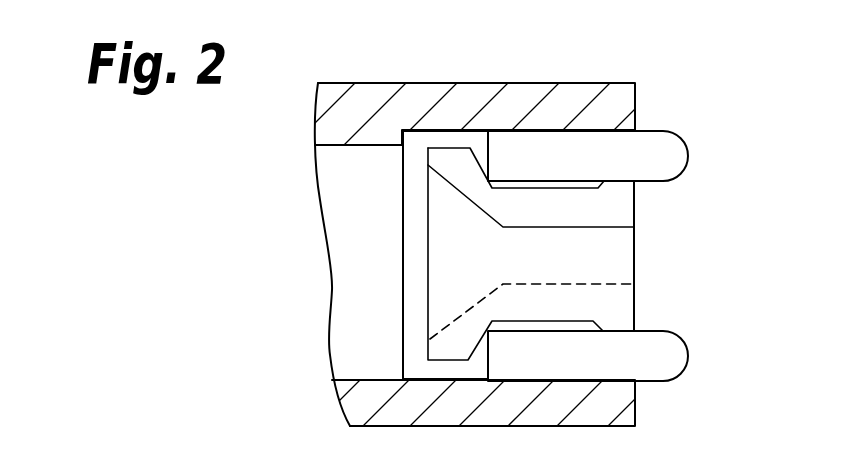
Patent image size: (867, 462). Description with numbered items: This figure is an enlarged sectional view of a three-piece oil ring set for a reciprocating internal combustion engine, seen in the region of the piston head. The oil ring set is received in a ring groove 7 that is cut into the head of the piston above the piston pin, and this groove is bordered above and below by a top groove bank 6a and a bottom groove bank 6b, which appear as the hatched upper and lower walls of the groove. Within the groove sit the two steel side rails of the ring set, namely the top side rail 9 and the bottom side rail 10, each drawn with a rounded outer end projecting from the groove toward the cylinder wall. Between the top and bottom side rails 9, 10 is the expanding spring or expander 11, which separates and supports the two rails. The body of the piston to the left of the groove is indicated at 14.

The top groove bank 6a is at (627, 95).
The bottom groove bank 6b is at (625, 398).
The ring groove 7 is at (410, 359).
The top side rail 9 is at (675, 155).
The bottom side rail 10 is at (677, 356).
The expander 11 is at (627, 201).
The housing 14 is at (338, 282).